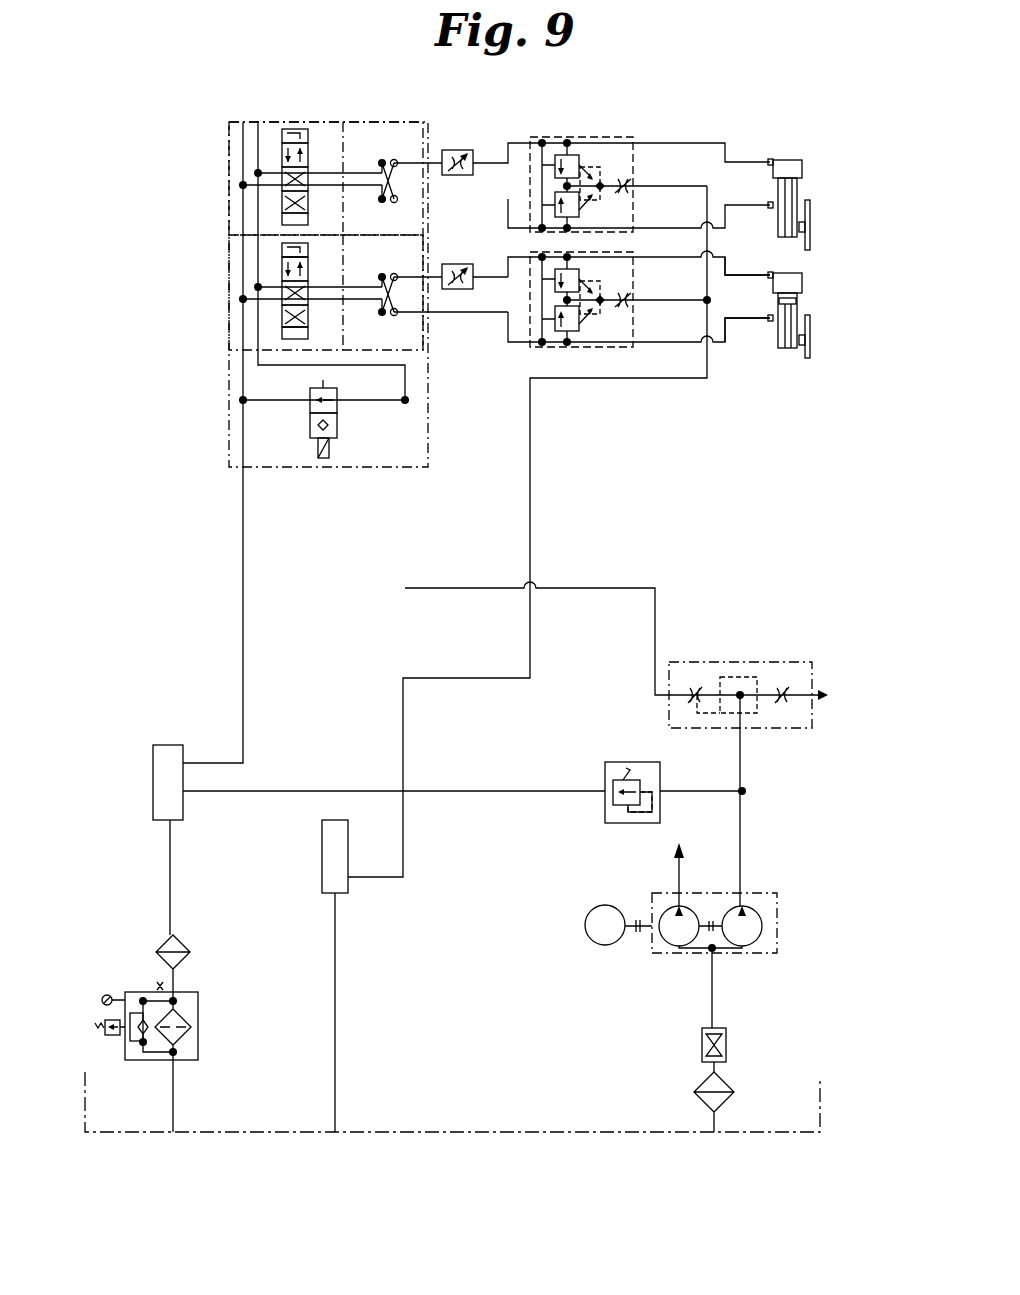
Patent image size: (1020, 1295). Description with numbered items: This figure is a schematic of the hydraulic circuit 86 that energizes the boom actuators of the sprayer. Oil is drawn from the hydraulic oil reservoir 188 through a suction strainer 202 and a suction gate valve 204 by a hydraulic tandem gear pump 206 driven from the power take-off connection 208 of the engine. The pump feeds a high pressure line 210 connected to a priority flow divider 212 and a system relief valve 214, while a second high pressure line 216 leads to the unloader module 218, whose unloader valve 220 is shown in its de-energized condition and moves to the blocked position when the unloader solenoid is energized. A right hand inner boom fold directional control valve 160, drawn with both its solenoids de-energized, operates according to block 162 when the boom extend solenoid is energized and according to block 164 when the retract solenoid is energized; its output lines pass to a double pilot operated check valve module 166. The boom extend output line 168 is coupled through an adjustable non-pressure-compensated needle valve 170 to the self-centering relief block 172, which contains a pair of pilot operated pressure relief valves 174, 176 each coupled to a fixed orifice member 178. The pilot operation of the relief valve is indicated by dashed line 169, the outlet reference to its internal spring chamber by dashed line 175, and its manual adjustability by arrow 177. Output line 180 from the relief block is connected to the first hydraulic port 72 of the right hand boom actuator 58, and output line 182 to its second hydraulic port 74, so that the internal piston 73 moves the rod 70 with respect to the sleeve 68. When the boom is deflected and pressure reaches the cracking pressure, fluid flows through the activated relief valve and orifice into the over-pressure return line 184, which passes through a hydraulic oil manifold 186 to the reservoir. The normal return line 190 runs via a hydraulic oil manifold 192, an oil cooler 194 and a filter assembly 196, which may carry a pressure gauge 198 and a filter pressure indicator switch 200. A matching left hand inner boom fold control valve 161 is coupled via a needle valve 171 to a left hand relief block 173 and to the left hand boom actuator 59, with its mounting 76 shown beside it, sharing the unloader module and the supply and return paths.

The boom actuator 58 is at (803, 295).
The left hand boom actuator 59 is at (810, 196).
The sleeve 68 is at (773, 300).
The rod 70 is at (785, 340).
The first hydraulic port 72 is at (808, 252).
The internal piston 73 is at (802, 274).
The second hydraulic port 74 is at (770, 322).
The mounting bracket 76 is at (810, 338).
The hydraulic circuit 86 is at (230, 652).
The right hand inner boom fold directional control valve 160 is at (229, 263).
The left hand inner boom fold control valve 161 is at (229, 143).
The extend block 162 is at (308, 267).
The retract block 164 is at (308, 321).
The double pilot operated check valve module 166 is at (423, 332).
The boom extend output line 168 is at (440, 264).
The pilot operation line 169 is at (518, 345).
The adjustable non-pressure-compensated needle valve 170 is at (460, 289).
The needle valve 171 is at (455, 150).
The self-centering relief block 172 is at (630, 357).
The left hand relief block 173 is at (630, 137).
The pilot operated pressure relief valve 174 is at (630, 243).
The outlet reference connection 175 is at (632, 262).
The pilot operated pressure relief valve 176 is at (632, 333).
The manual adjustment arrow 177 is at (575, 345).
The fixed orifice member 178 is at (634, 294).
The output line 180 is at (706, 252).
The output line 182 is at (716, 346).
The over-pressure return line 184 is at (530, 508).
The hydraulic oil manifold 186 is at (322, 835).
The hydraulic oil reservoir 188 is at (468, 1130).
The normal return line 190 is at (245, 688).
The hydraulic oil manifold 192 is at (153, 795).
The oil cooler 194 is at (185, 940).
The filter assembly 196 is at (198, 1020).
The pressure gauge 198 is at (107, 995).
The filter pressure indicator switch 200 is at (100, 1028).
The suction strainer 202 is at (733, 1082).
The suction gate valve 204 is at (728, 1045).
The hydraulic tandem gear pump 206 is at (760, 950).
The power take-off connection 208 is at (600, 945).
The high pressure line 210 is at (742, 822).
The priority flow divider 212 is at (707, 662).
The system relief valve 214 is at (598, 763).
The high pressure line 216 is at (640, 588).
The unloader module 218 is at (335, 467).
The unloader valve 220 is at (398, 440).